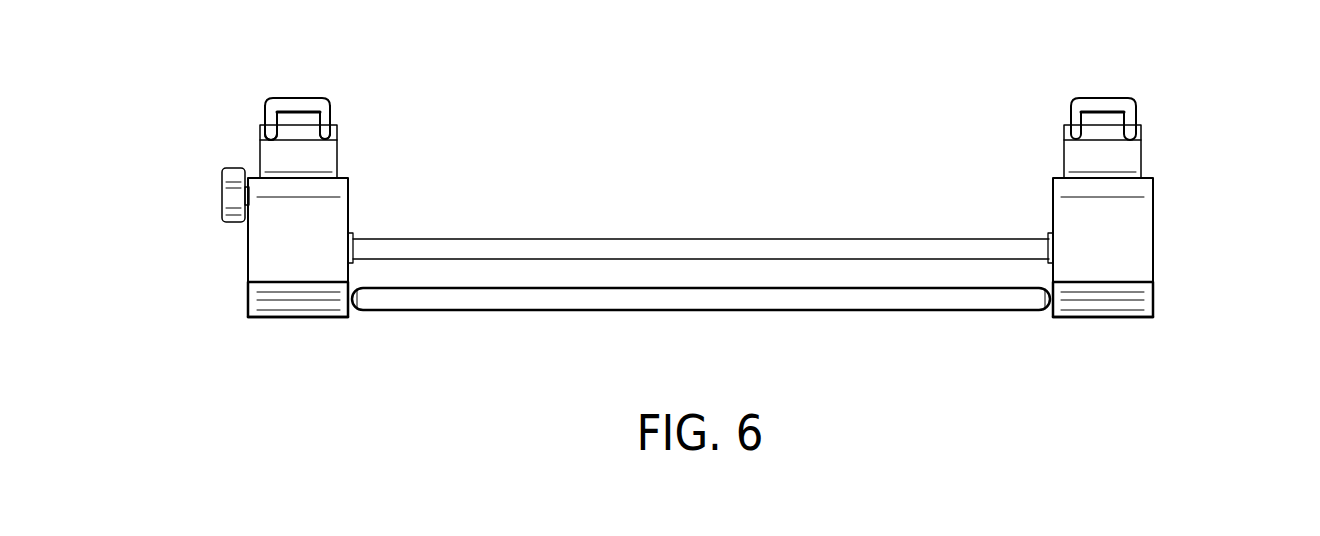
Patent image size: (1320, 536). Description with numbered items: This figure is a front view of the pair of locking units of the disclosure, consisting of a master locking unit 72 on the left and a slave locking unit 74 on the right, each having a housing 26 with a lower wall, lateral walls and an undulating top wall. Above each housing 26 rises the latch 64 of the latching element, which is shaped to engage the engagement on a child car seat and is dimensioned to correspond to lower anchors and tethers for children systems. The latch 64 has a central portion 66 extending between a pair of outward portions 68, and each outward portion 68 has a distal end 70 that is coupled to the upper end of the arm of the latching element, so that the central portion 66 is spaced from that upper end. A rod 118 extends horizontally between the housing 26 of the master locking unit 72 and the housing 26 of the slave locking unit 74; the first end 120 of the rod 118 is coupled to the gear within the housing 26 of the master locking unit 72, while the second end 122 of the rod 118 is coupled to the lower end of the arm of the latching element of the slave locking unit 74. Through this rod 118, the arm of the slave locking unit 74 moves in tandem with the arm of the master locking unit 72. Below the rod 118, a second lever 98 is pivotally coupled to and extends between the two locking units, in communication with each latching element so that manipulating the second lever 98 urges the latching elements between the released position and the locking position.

The housing 26 is at (1153, 317).
The latch 64 is at (329, 100).
The central portion 66 is at (296, 96).
The outward portions 68 is at (262, 112).
The distal end 70 is at (271, 141).
The master locking unit 72 is at (246, 249).
The slave locking unit 74 is at (1155, 229).
The second lever 98 is at (503, 303).
The rod 118 is at (818, 245).
The first end 120 is at (347, 245).
The second end 122 is at (1053, 248).